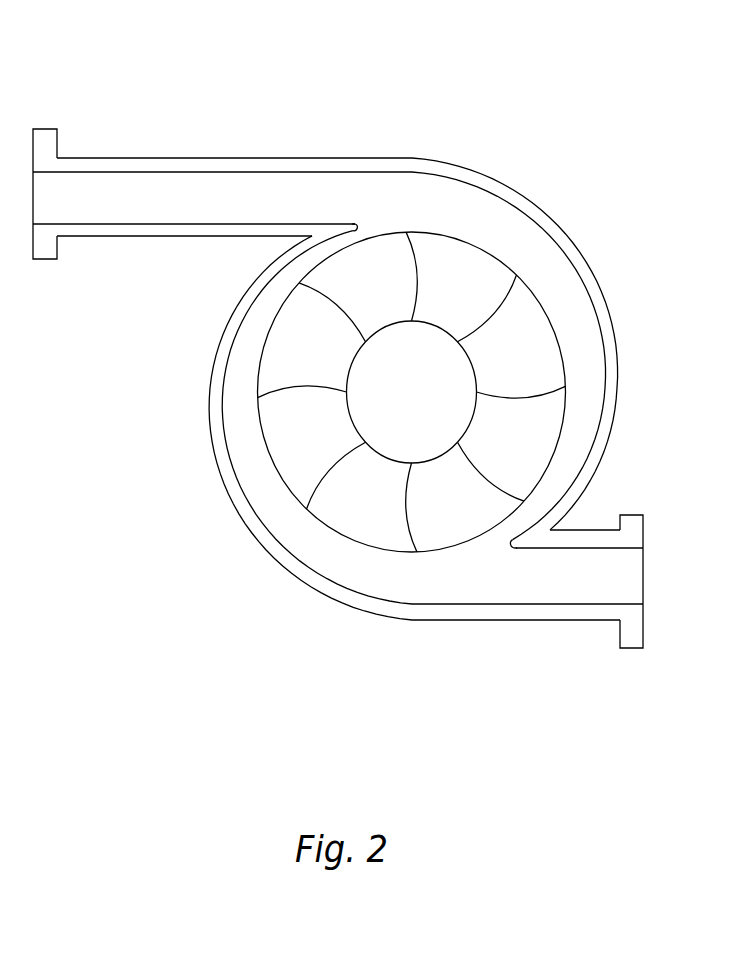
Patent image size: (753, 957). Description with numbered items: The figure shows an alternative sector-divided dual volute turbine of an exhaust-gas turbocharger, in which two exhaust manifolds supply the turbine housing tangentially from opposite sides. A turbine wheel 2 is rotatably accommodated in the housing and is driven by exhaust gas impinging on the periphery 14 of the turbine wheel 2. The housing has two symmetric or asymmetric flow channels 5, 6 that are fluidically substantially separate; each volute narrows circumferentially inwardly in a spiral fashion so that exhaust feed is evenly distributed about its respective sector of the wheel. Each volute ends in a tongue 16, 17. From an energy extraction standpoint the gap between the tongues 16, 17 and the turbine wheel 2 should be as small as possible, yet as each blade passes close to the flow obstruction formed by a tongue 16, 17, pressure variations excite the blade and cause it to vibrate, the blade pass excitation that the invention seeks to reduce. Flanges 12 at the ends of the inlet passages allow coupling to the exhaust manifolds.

The turbine wheel 2 is at (521, 357).
The first flow channel 5 is at (475, 216).
The second flow channel 6 is at (371, 580).
The flange 12 is at (43, 128).
The periphery of the turbine wheel 14 is at (578, 457).
The tongue 16 is at (514, 549).
The tongue 17 is at (349, 223).